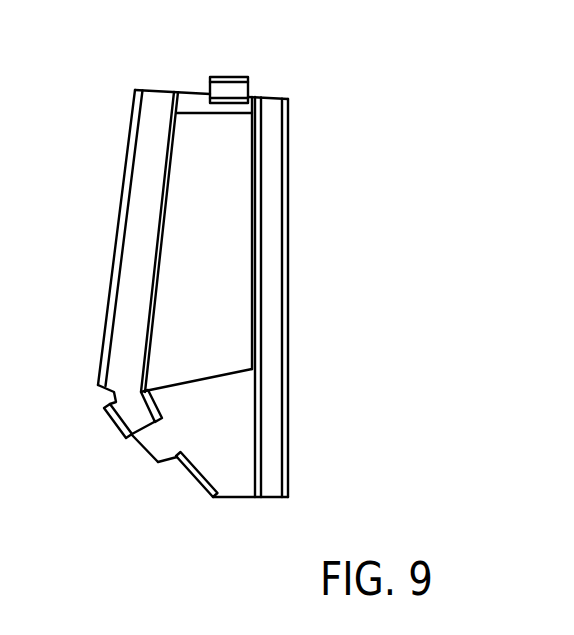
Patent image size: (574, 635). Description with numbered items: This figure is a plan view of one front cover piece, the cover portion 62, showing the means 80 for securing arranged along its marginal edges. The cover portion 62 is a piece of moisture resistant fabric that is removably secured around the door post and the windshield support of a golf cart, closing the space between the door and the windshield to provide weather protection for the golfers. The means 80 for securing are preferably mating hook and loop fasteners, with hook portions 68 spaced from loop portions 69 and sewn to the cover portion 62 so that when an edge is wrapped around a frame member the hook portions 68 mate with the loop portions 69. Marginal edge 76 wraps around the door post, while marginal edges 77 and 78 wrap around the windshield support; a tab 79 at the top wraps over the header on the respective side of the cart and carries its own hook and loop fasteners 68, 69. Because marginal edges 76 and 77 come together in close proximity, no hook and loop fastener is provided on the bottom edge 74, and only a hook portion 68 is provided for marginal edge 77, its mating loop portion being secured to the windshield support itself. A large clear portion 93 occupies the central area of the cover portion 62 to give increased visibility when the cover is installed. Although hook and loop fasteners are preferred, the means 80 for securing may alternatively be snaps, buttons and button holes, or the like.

The means for securing 80 is at (105, 533).
The marginal edge 78 is at (130, 125).
The hook portions 68 is at (129, 175).
The loop portions 69 is at (154, 257).
The tab 79 is at (228, 77).
The clear portion 93 is at (190, 334).
The marginal edge 76 is at (270, 360).
The cover portion 62 is at (190, 423).
The marginal edge 77 is at (204, 490).
The bottom edge 74 is at (247, 498).